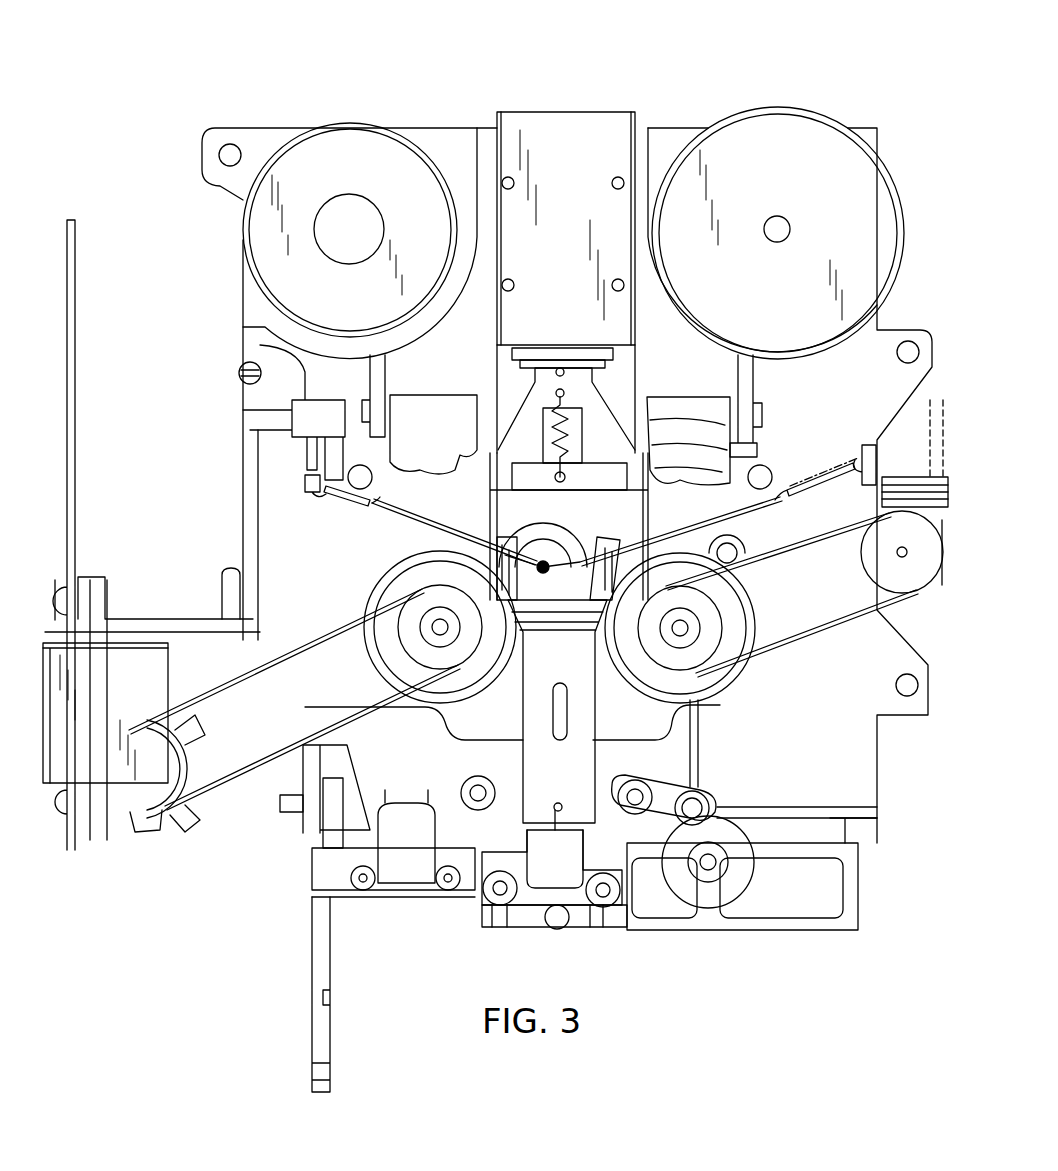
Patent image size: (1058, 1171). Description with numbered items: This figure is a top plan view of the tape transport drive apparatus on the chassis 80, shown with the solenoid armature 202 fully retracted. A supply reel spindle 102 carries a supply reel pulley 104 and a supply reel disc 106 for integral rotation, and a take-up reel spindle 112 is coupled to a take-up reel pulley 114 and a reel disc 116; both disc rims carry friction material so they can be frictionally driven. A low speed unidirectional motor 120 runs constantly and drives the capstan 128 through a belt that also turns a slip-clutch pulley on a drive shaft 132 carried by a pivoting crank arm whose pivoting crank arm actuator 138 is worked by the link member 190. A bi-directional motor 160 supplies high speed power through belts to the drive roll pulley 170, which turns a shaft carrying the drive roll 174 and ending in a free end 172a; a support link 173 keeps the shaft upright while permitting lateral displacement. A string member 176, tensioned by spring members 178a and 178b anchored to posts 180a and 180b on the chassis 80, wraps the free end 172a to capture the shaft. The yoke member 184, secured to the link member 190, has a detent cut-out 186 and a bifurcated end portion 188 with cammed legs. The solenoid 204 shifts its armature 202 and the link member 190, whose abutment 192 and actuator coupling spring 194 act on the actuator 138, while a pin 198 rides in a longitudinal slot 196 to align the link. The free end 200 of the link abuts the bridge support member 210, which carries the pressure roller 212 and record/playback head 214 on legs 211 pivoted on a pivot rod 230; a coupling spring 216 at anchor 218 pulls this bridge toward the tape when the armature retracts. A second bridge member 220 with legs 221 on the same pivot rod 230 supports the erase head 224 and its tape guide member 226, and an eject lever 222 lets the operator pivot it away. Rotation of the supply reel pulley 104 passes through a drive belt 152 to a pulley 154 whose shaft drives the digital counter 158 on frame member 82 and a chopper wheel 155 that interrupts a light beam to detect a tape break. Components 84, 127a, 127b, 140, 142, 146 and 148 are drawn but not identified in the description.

The chassis 80 is at (234, 120).
The frame member 82 is at (68, 852).
The bracket 84 is at (303, 768).
The supply reel spindle 102 is at (444, 616).
The supply reel pulley 104 is at (458, 653).
The supply reel disc 106 is at (458, 700).
The take-up reel spindle 112 is at (702, 627).
The take-up reel pulley 114 is at (660, 668).
The reel disc 116 is at (752, 605).
The motor 120 is at (770, 115).
The roller 127a is at (467, 793).
The roller 127b is at (630, 792).
The capstan 128 is at (710, 795).
The drive shaft 132 is at (733, 548).
The pivoting crank arm actuator 138 is at (573, 477).
The drive belt 140 is at (793, 636).
The pulley 142 is at (868, 568).
The roller 146 is at (900, 480).
The shaft 148 is at (948, 560).
The drive belt 152 is at (352, 718).
The pulley 154 is at (158, 810).
The chopper wheel 155 is at (140, 838).
The digital counter 158 is at (127, 645).
The bi-directional motor 160 is at (352, 128).
The drive roll pulley 170 is at (505, 548).
The free end 172a is at (553, 557).
The support link 173 is at (513, 473).
The drive roll 174 is at (549, 572).
The string member 176 is at (517, 518).
The spring member 178a is at (327, 512).
The spring member 178b is at (810, 498).
The post 180a is at (305, 483).
The post 180b is at (884, 460).
The yoke member 184 is at (587, 598).
The cut-out 186 is at (600, 567).
The bifurcated end portion 188 is at (610, 545).
The link member 190 is at (652, 425).
The abutment 192 is at (537, 463).
The actuator coupling spring 194 is at (549, 410).
The longitudinal slot 196 is at (562, 697).
The pin 198 is at (557, 802).
The free end 200 is at (537, 819).
The armature 202 is at (600, 373).
The solenoid 204 is at (525, 112).
The bridge support member 210 is at (845, 937).
The legs 211 is at (848, 837).
The pressure roller 212 is at (753, 885).
The record/playback head 214 is at (537, 890).
The coupling spring 216 is at (555, 825).
The anchor 218 is at (565, 928).
The bridge member 220 is at (380, 904).
The legs 221 is at (332, 837).
The eject lever 222 is at (313, 957).
The erase head 224 is at (420, 873).
The tape guide member 226 is at (387, 802).
The pivot rod 230 is at (288, 810).